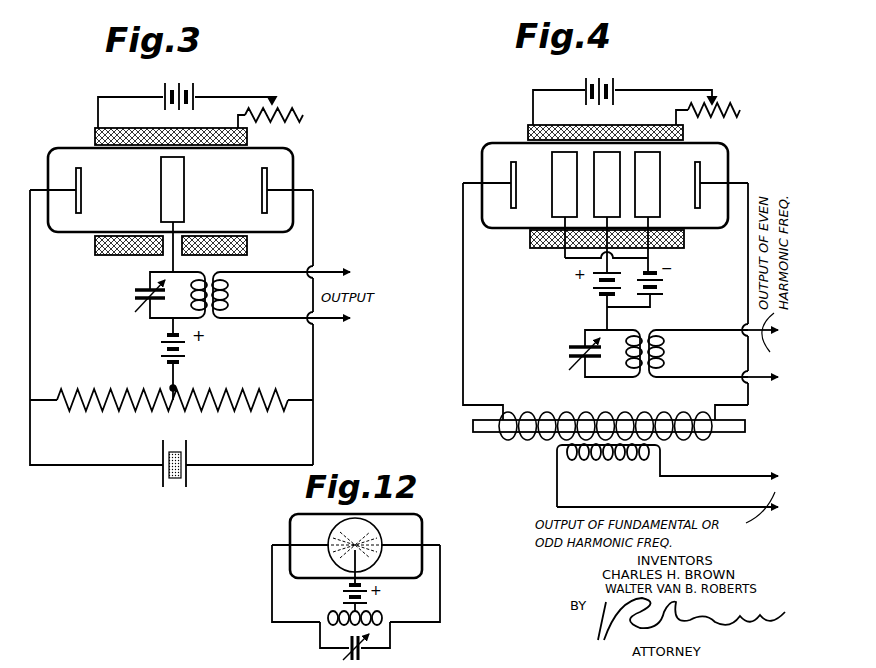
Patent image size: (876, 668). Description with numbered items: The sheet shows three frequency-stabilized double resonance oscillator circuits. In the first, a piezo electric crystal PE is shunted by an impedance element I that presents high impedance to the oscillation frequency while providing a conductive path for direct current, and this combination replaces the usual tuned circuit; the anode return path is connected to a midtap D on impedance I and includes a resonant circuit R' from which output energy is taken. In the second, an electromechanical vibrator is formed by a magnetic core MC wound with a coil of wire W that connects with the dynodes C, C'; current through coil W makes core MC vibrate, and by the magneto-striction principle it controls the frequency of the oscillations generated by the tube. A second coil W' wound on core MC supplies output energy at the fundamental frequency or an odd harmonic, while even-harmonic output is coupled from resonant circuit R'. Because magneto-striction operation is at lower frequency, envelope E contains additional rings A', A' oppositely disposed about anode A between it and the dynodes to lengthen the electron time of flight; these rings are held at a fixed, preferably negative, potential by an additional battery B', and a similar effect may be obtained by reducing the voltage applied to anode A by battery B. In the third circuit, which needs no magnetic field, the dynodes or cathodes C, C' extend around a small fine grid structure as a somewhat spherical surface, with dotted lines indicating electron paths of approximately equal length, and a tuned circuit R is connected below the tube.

In FIG. 3, the anode A is at (189, 189).
In FIG. 4, the anode A is at (599, 184).
In FIG. 4, the rings A' is at (605, 184).
In FIG. 4, the dynode C is at (502, 185).
In FIG. 12, the dynode C is at (304, 534).
In FIG. 4, the dynode C' is at (709, 185).
In FIG. 12, the dynode C' is at (408, 533).
In FIG. 4, the envelope E is at (490, 145).
In FIG. 3, the resonant circuit R' is at (224, 287).
In FIG. 4, the resonant circuit R' is at (649, 344).
In FIG. 12, the tuned circuit R is at (368, 635).
In FIG. 3, the midtap D is at (176, 386).
In FIG. 3, the impedance element I is at (120, 390).
In FIG. 3, the piezo electric crystal PE is at (175, 483).
In FIG. 4, the battery B is at (590, 286).
In FIG. 4, the additional battery B' is at (667, 285).
In FIG. 4, the magnetic core MC is at (470, 425).
In FIG. 4, the coil of wire W is at (605, 413).
In FIG. 4, the second coil W' is at (667, 475).